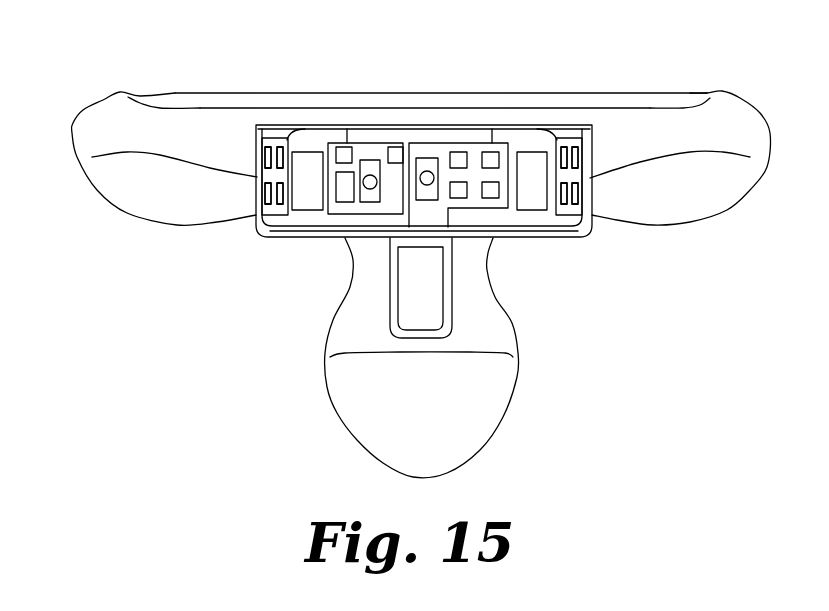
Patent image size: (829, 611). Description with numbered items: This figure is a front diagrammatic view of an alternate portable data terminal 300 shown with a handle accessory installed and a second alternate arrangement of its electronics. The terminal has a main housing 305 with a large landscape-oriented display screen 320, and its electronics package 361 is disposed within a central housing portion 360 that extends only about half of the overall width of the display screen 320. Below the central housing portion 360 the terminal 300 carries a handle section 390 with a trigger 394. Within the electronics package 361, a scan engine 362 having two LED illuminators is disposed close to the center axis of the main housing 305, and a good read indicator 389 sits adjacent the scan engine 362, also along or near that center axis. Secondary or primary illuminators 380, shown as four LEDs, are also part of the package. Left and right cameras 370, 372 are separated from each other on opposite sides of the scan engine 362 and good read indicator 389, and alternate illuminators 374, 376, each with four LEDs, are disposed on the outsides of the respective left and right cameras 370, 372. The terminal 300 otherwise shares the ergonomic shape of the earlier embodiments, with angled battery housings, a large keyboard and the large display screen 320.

The portable data terminal 300 is at (104, 250).
The main housing 305 is at (92, 98).
The display screen 320 is at (687, 92).
The central housing portion 360 is at (272, 240).
The electronics package 361 is at (535, 245).
The scan engine 362 is at (367, 150).
The left camera 370 is at (308, 170).
The right camera 372 is at (529, 170).
The alternate illuminator 374 is at (276, 135).
The alternate illuminator 376 is at (568, 138).
The secondary illuminators 380 is at (477, 133).
The good read indicator 389 is at (428, 158).
The handle section 390 is at (352, 434).
The trigger 394 is at (413, 296).